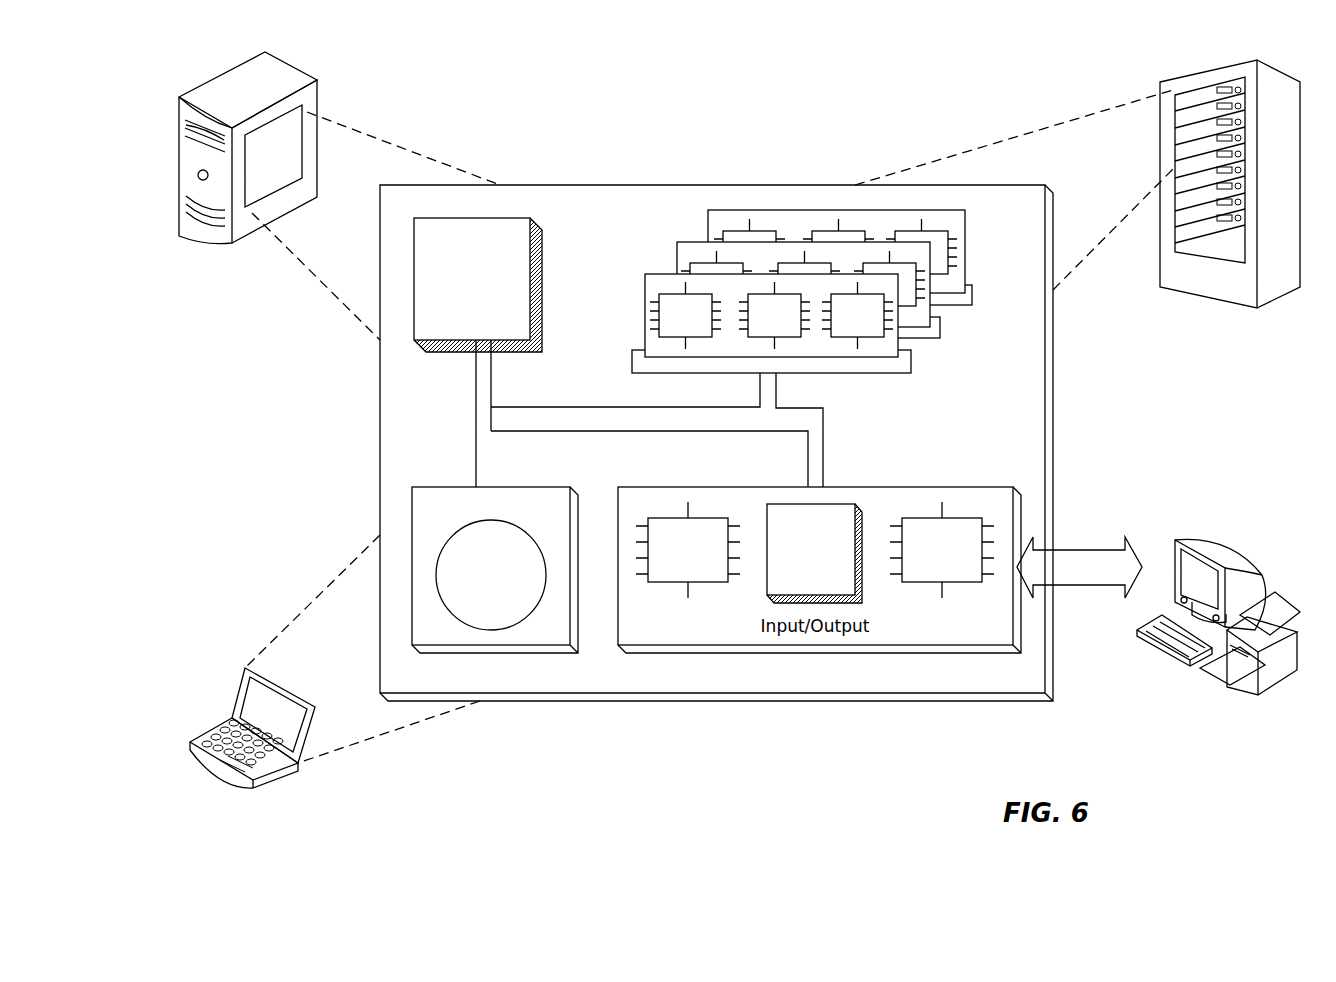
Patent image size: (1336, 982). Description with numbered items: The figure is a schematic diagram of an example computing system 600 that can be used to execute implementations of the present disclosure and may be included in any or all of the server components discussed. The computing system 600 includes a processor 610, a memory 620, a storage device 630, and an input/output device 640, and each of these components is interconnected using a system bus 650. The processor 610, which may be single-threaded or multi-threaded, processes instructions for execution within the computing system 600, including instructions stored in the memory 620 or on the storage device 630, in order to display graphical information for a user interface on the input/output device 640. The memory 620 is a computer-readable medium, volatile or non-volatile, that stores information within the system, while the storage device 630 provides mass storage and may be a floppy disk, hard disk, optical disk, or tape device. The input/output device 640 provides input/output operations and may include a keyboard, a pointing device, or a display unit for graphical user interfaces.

The computing system 600 is at (558, 114).
The processor 610 is at (478, 285).
The memory 620 is at (968, 337).
The storage device 630 is at (495, 570).
The input/output device 640 is at (1170, 542).
The system bus 650 is at (645, 426).